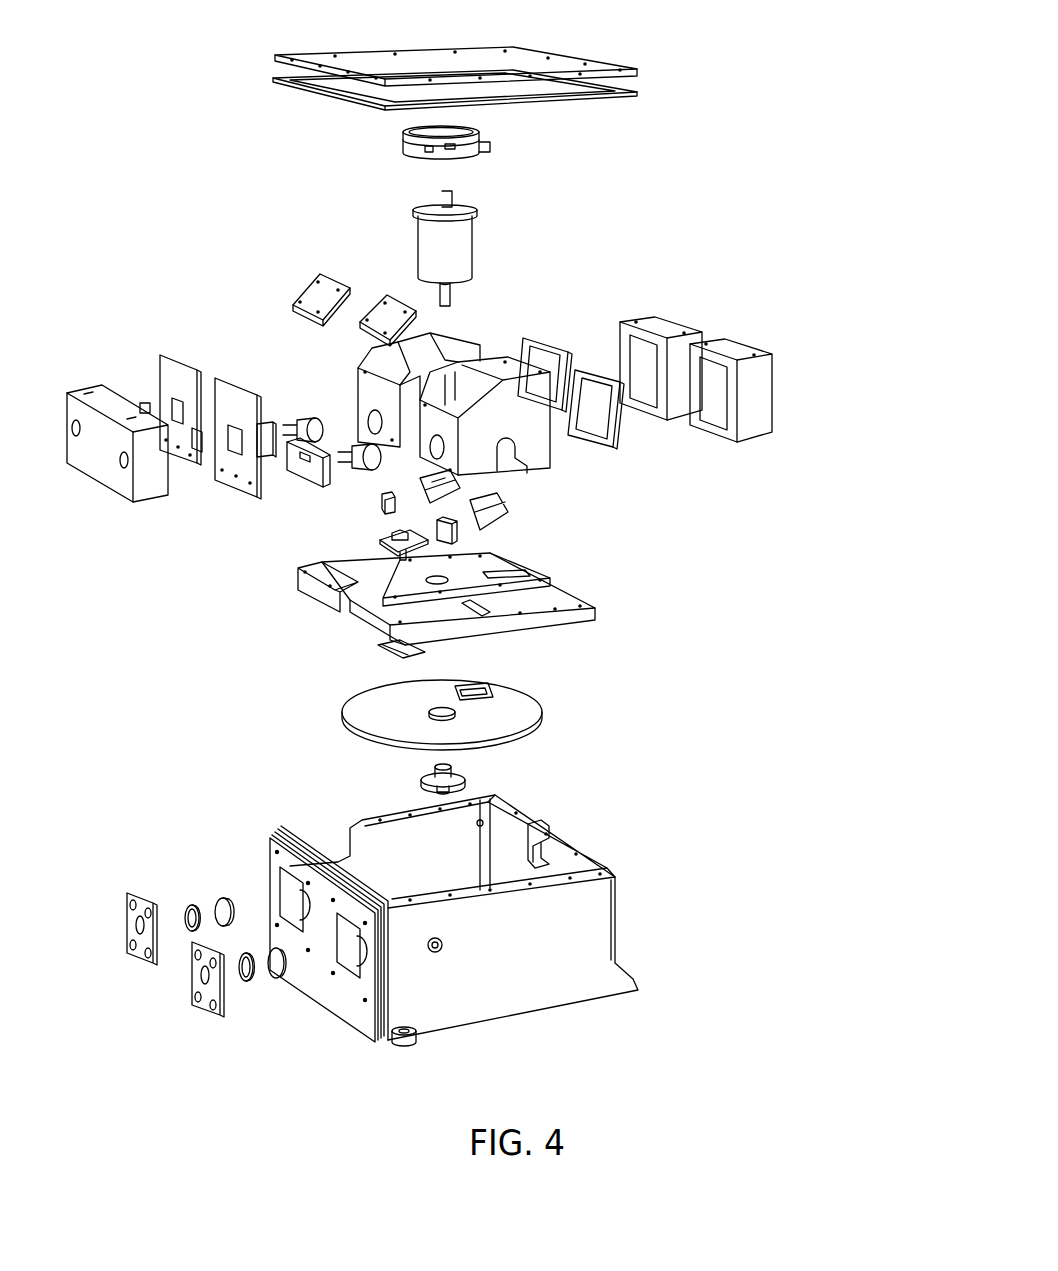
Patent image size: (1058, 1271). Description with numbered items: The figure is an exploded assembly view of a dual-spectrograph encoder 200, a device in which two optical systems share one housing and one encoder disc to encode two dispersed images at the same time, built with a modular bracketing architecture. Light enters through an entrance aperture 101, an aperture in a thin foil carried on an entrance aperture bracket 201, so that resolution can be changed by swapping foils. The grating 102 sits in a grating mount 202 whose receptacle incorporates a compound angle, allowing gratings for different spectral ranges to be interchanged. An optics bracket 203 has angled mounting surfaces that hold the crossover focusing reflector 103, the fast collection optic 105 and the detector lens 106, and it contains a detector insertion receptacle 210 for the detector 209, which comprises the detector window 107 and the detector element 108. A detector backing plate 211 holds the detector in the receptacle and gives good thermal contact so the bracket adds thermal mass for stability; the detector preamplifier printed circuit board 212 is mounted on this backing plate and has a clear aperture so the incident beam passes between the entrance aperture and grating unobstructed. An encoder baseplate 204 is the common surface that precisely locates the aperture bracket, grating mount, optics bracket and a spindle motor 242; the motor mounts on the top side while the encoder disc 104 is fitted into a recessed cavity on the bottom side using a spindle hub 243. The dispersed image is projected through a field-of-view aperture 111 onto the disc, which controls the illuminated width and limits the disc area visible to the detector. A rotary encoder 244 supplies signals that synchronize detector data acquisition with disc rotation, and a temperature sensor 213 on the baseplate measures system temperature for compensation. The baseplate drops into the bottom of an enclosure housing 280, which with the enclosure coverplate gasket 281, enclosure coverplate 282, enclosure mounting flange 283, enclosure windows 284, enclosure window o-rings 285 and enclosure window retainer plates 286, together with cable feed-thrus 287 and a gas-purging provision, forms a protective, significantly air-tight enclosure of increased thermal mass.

The dual-spectrograph encoder 200 is at (158, 172).
The enclosure coverplate 282 is at (646, 70).
The enclosure coverplate gasket 281 is at (650, 102).
The rotary encoder 244 is at (408, 142).
The spindle motor 242 is at (483, 237).
The crossover focusing reflector 103 is at (374, 291).
The optics bracket 203 is at (510, 357).
The grating 102 is at (627, 434).
The grating mount 202 is at (754, 455).
The entrance aperture bracket 201 is at (81, 384).
The entrance aperture 101 is at (193, 430).
The detector preamplifier printed circuit board 212 is at (243, 496).
The detector backing plate 211 is at (313, 489).
The detector insertion receptacle 210 is at (418, 461).
The detector 209 is at (271, 374).
The detector window 107 is at (242, 373).
The detector element 108 is at (360, 440).
The fast collection optic 105 is at (512, 503).
The detector lens 106 is at (464, 531).
The temperature sensor 213 is at (434, 546).
The encoder baseplate 204 is at (602, 613).
The field-of-view aperture 111 is at (506, 697).
The encoder disc 104 is at (417, 715).
The spindle hub 243 is at (472, 772).
The enclosure housing 280 is at (627, 925).
The cable feed-thrus 287 is at (555, 838).
The enclosure mounting flange 283 is at (269, 857).
The enclosure windows 284 is at (287, 982).
The enclosure window o-rings 285 is at (255, 990).
The enclosure window retainer plates 286 is at (224, 1020).